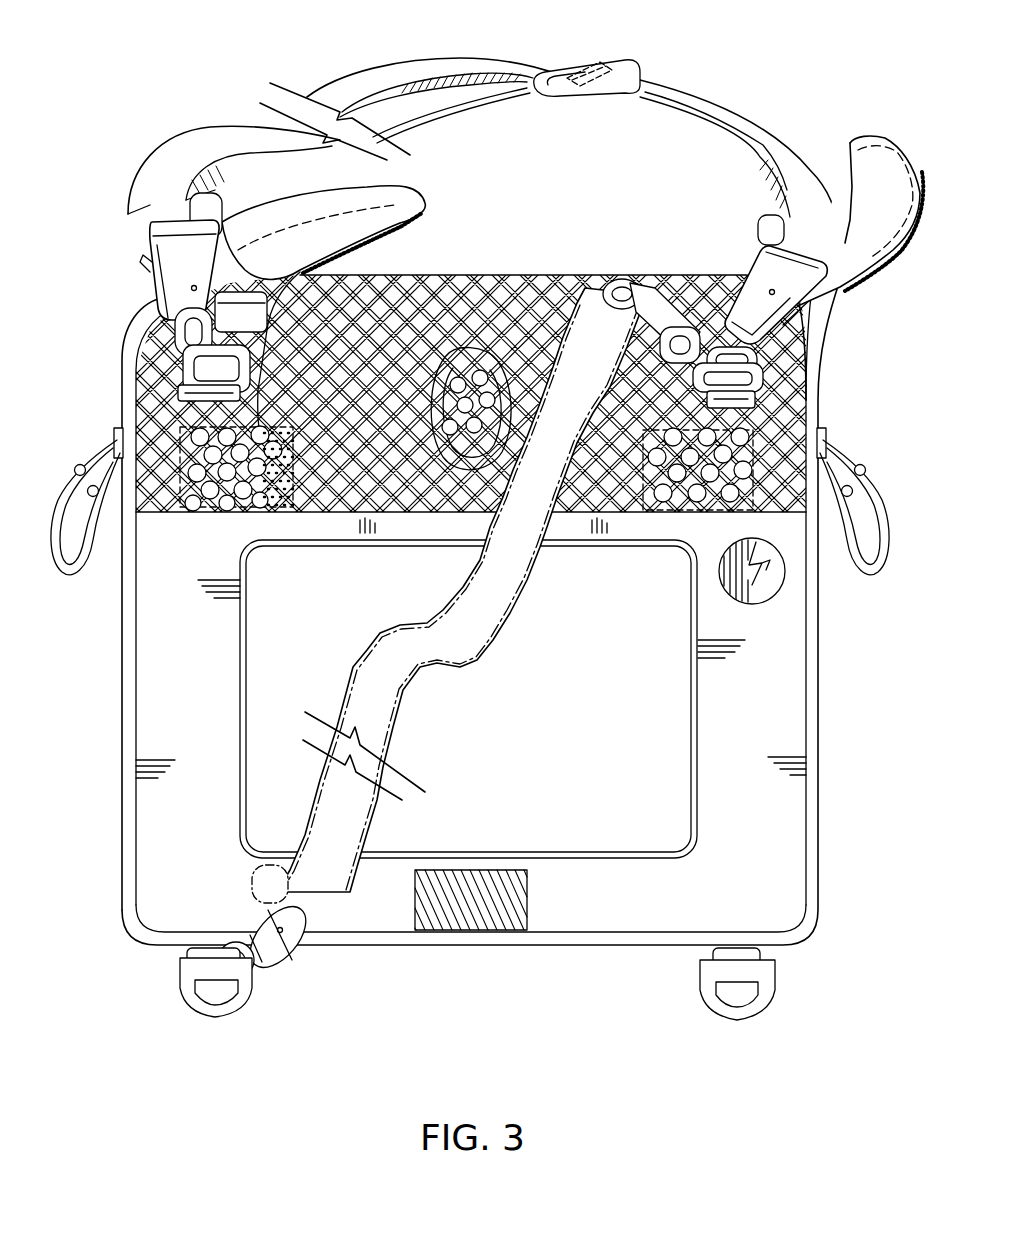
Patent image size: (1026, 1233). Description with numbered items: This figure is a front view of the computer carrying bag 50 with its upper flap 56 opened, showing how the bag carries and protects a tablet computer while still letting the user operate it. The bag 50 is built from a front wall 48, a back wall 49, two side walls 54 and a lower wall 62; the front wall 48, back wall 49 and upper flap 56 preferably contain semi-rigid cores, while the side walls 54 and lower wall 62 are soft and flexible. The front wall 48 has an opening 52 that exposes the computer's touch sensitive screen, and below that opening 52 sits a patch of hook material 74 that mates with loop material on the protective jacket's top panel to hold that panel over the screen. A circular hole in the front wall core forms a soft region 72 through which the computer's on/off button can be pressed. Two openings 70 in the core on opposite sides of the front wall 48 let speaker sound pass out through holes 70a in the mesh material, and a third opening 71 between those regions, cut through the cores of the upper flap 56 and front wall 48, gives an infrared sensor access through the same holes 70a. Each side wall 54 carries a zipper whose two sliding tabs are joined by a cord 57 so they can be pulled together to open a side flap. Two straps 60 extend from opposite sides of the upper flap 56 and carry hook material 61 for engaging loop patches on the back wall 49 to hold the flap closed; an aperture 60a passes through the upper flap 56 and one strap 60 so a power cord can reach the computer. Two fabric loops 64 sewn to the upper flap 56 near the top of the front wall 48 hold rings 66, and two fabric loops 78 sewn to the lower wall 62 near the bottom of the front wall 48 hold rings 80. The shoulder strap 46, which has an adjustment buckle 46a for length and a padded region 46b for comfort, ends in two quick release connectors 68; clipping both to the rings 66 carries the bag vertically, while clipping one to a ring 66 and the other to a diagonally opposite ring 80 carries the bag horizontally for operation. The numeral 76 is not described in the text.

The shoulder strap 46 is at (727, 107).
The adjustment buckle 46a is at (633, 70).
The padded region 46b is at (427, 115).
The front wall 48 is at (790, 870).
The back wall 49 is at (572, 786).
The computer carrying bag 50 is at (288, 1056).
The opening 52 is at (612, 845).
The side walls 54 is at (122, 718).
The upper flap 56 is at (527, 277).
The cord 57 is at (80, 578).
The straps 60 is at (403, 197).
The aperture 60a is at (230, 283).
The hook material 61 is at (390, 230).
The lower wall 62 is at (413, 947).
The loops 64 is at (183, 392).
The rings 66 is at (175, 358).
The quick release connectors 68 is at (170, 250).
The openings 70 is at (278, 492).
The holes 70a is at (257, 493).
The third opening 71 is at (448, 460).
The soft region 72 is at (727, 593).
The hook material patch 74 is at (498, 932).
The bottom edge 76 is at (663, 932).
The loops 78 is at (187, 953).
The rings 80 is at (197, 1007).